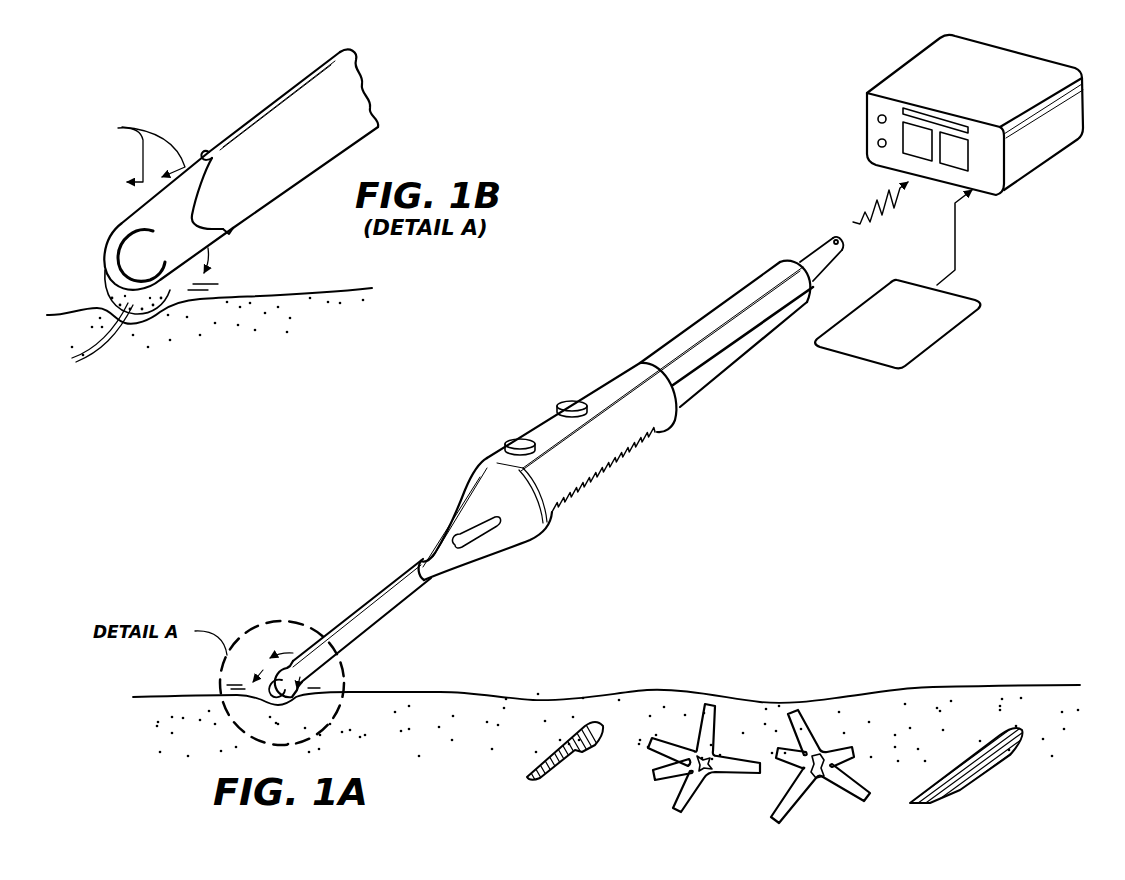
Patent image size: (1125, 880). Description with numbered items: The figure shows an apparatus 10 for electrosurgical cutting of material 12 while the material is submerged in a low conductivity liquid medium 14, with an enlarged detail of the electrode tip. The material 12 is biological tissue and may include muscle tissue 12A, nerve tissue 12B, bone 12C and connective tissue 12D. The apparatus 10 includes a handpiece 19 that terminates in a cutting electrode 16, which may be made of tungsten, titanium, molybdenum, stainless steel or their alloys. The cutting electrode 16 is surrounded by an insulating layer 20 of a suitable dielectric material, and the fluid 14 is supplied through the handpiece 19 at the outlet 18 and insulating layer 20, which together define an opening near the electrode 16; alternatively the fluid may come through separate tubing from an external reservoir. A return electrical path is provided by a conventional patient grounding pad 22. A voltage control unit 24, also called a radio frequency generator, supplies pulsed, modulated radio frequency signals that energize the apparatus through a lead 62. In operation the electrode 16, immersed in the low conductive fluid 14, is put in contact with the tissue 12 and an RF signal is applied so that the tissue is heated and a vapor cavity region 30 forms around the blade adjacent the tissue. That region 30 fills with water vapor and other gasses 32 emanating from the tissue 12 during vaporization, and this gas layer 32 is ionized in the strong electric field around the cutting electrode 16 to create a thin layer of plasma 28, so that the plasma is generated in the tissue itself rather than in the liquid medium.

In FIG. 1A, the apparatus 10 is at (676, 366).
In FIG. 1B, the material 12 is at (237, 295).
In FIG. 1A, the material 12 is at (430, 692).
In FIG. 1A, the muscle tissue 12A is at (560, 770).
In FIG. 1A, the nerve tissue 12B is at (700, 707).
In FIG. 1A, the bone 12C is at (980, 783).
In FIG. 1A, the connective tissue 12D is at (407, 748).
In FIG. 1B, the low conductivity liquid medium 14 is at (230, 349).
In FIG. 1B, the cutting electrode 16 is at (122, 243).
In FIG. 1B, the fluid outlet 18 is at (203, 153).
In FIG. 1A, the handpiece 19 is at (613, 381).
In FIG. 1B, the insulating layer 20 is at (225, 232).
In FIG. 1A, the patient grounding pad 22 is at (900, 367).
In FIG. 1A, the voltage control unit 24 is at (912, 82).
In FIG. 1B, the plasma 28 is at (115, 300).
In FIG. 1B, the vapor cavity region 30 is at (108, 290).
In FIG. 1B, the gasses 32 is at (88, 338).
In FIG. 1A, the lead 62 is at (872, 192).